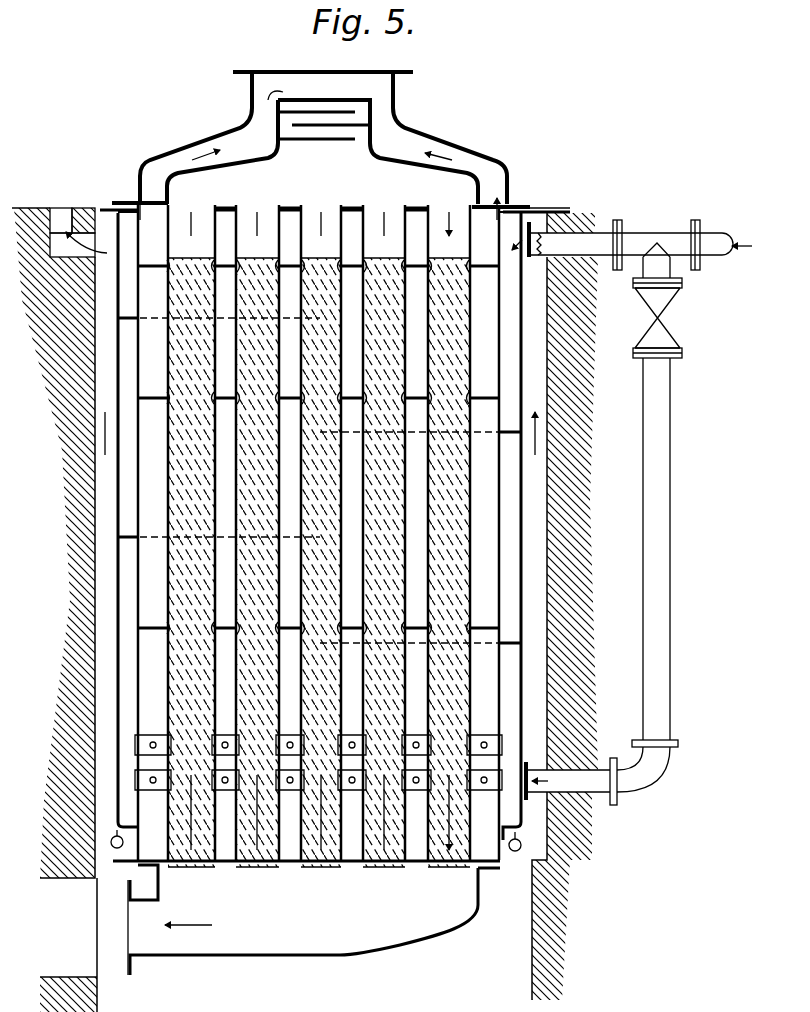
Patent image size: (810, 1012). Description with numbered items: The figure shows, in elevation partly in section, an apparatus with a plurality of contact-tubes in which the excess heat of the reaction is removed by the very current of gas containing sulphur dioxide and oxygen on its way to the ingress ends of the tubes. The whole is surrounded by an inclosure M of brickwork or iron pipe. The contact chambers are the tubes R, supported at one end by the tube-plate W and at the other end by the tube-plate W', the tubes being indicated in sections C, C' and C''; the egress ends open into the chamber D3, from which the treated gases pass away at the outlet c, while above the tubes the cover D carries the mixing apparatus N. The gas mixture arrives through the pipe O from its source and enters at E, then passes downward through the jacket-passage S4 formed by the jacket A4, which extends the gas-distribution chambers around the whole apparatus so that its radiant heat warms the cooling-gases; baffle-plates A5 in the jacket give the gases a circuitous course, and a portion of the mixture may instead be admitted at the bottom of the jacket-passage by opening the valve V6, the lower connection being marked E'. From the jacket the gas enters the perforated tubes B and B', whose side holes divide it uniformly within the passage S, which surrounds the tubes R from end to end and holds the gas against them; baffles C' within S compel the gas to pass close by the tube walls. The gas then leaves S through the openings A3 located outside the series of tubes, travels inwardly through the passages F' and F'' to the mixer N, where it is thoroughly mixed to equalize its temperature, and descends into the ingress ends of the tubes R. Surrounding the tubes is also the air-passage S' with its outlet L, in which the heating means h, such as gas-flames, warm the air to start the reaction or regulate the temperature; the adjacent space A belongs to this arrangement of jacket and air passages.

The mixing apparatus N is at (288, 96).
The passage F'' is at (232, 142).
The passage F' is at (432, 141).
The cover D is at (320, 200).
The openings A3 is at (137, 203).
The inclosure M is at (305, 610).
The outlet L is at (60, 208).
The air passage A is at (316, 501).
The jacket A4 is at (129, 280).
The baffle-plates A5 is at (122, 320).
The tube C is at (318, 532).
The baffles C' is at (318, 391).
The tube section C'' is at (318, 505).
The contact chamber R is at (319, 562).
The passage S is at (318, 476).
The jacket-passage S4 is at (120, 598).
The air-passage S' is at (570, 386).
The tube B' is at (318, 734).
The tube B is at (318, 791).
The means of heating h is at (314, 835).
The tube-plate W' is at (357, 878).
The tube-plate W is at (563, 199).
The chamber D3 is at (314, 920).
The outlet c is at (175, 917).
The inlet E is at (617, 245).
The pipe O is at (737, 237).
The valve V6 is at (673, 313).
The return pipe E' is at (602, 581).